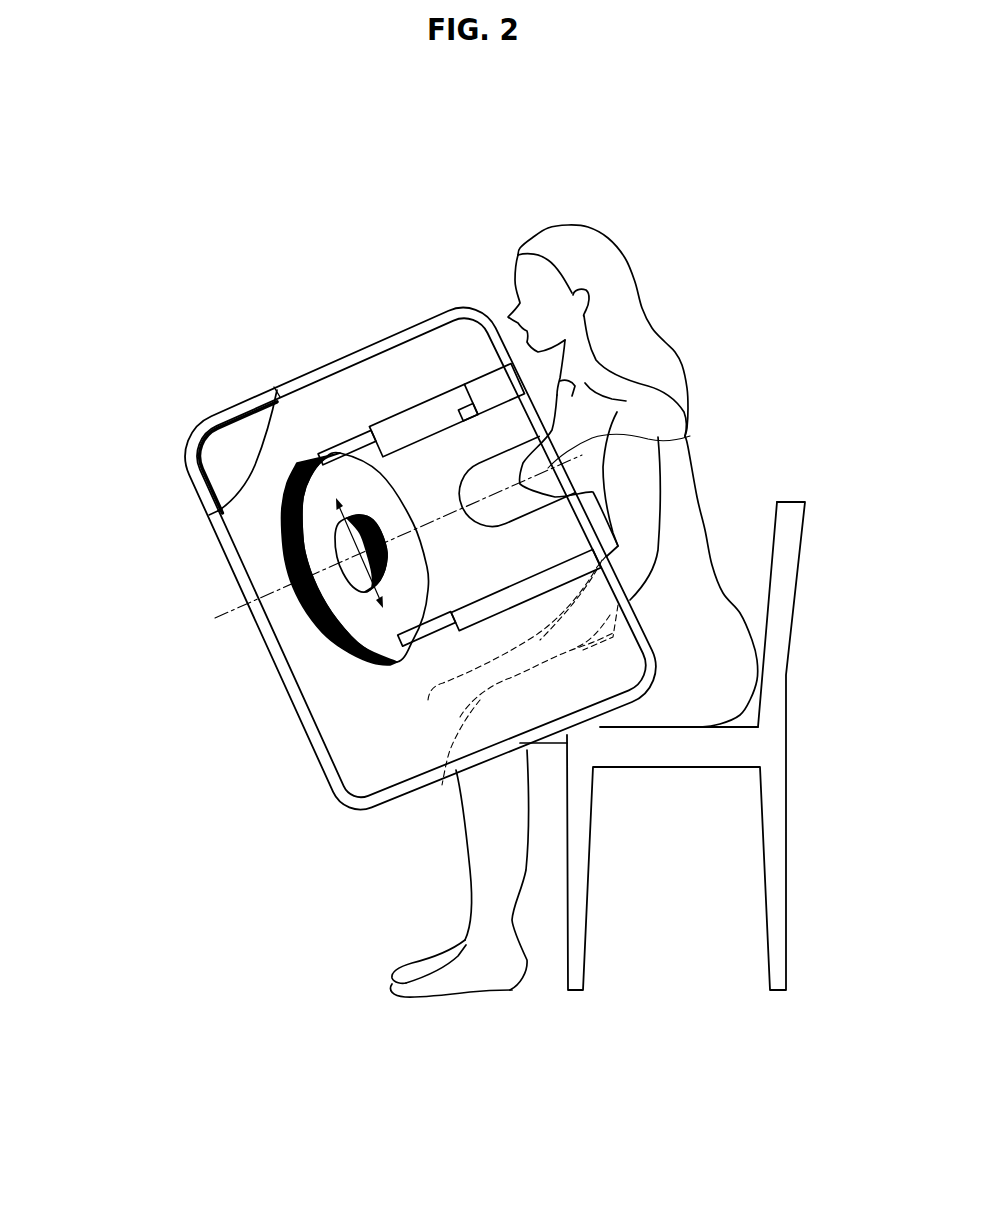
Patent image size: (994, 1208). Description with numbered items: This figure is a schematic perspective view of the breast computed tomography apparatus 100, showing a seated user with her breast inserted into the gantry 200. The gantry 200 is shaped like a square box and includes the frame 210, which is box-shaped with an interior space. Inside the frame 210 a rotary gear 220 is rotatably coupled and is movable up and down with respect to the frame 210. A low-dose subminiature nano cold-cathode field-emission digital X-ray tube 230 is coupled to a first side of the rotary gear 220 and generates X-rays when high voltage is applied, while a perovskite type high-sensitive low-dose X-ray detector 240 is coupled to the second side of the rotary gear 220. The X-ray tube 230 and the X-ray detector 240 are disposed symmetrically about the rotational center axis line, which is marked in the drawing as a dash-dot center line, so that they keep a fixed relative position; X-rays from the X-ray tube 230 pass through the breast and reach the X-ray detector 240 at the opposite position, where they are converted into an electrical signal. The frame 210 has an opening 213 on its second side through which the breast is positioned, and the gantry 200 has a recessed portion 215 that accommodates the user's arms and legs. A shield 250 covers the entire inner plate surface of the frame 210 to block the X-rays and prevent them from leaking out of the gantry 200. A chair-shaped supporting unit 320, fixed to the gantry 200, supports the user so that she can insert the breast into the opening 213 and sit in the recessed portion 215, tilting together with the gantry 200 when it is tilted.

The breast computed tomography apparatus 100 is at (408, 153).
The gantry 200 is at (181, 461).
The frame 210 is at (304, 372).
The opening 213 is at (690, 436).
The recessed portion 215 is at (428, 700).
The rotary gear 220 is at (285, 526).
The X-ray tube 230 is at (430, 410).
The X-ray detector 240 is at (450, 622).
The shield 250 is at (231, 414).
The supporting unit 320 is at (790, 577).